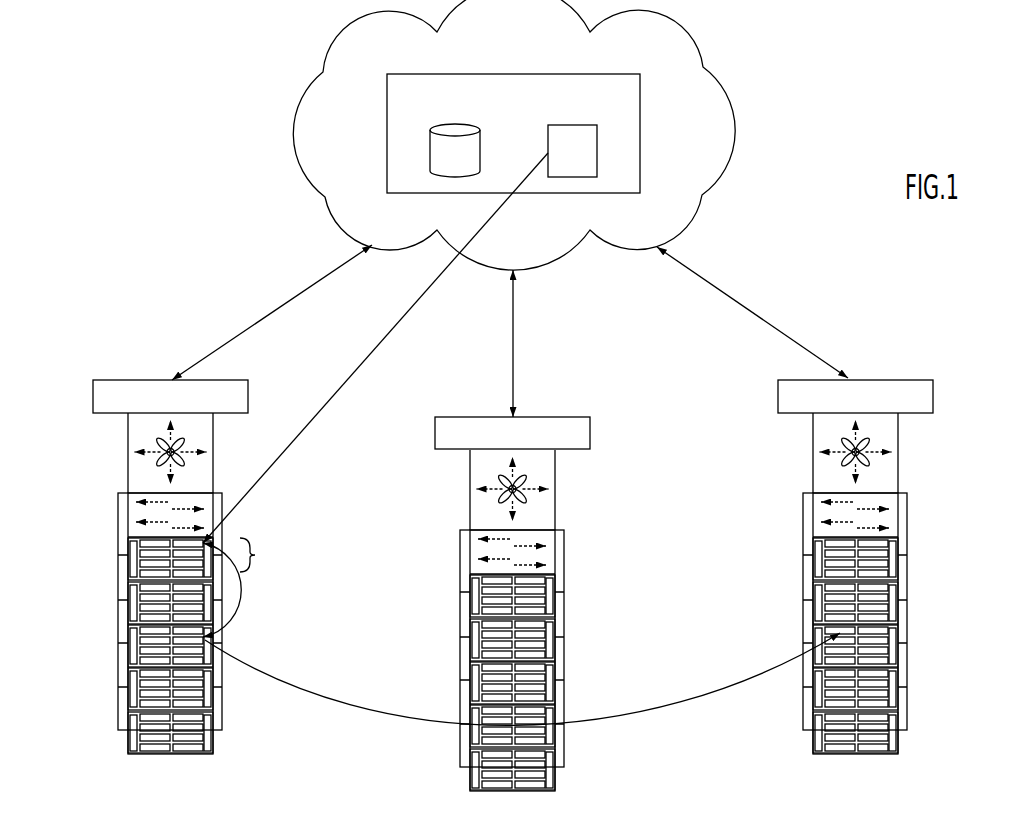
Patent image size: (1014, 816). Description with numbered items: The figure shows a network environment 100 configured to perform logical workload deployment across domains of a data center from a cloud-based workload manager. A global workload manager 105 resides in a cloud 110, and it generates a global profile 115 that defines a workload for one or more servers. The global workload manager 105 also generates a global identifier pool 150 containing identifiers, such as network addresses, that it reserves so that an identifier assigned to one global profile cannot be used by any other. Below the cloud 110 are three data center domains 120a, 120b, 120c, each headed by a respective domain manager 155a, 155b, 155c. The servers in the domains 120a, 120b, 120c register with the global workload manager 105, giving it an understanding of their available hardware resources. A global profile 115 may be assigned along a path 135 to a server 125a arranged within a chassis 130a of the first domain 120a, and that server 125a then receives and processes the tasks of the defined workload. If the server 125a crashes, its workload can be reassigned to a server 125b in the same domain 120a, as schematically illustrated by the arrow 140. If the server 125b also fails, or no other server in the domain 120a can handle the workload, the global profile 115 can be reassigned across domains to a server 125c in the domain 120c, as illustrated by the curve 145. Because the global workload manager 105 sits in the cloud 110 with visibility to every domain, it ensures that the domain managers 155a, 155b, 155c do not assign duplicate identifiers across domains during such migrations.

The data center system 100 is at (91, 160).
The global workload manager 105 is at (490, 74).
The cloud 110 is at (730, 100).
The global profile 115 is at (560, 156).
The global identifier pool 150 is at (443, 161).
The domain 120a is at (163, 550).
The domain 120b is at (487, 583).
The domain 120c is at (851, 553).
The domain manager 155a is at (138, 380).
The domain manager 155b is at (575, 417).
The domain manager 155c is at (933, 398).
The server 125a is at (206, 540).
The server 125b is at (206, 641).
The server 125c is at (813, 630).
The chassis 130a is at (270, 555).
The workload assignment link 135 is at (375, 348).
The intra-domain workload reassignment 140 is at (243, 606).
The cross-domain workload reassignment 145 is at (648, 710).